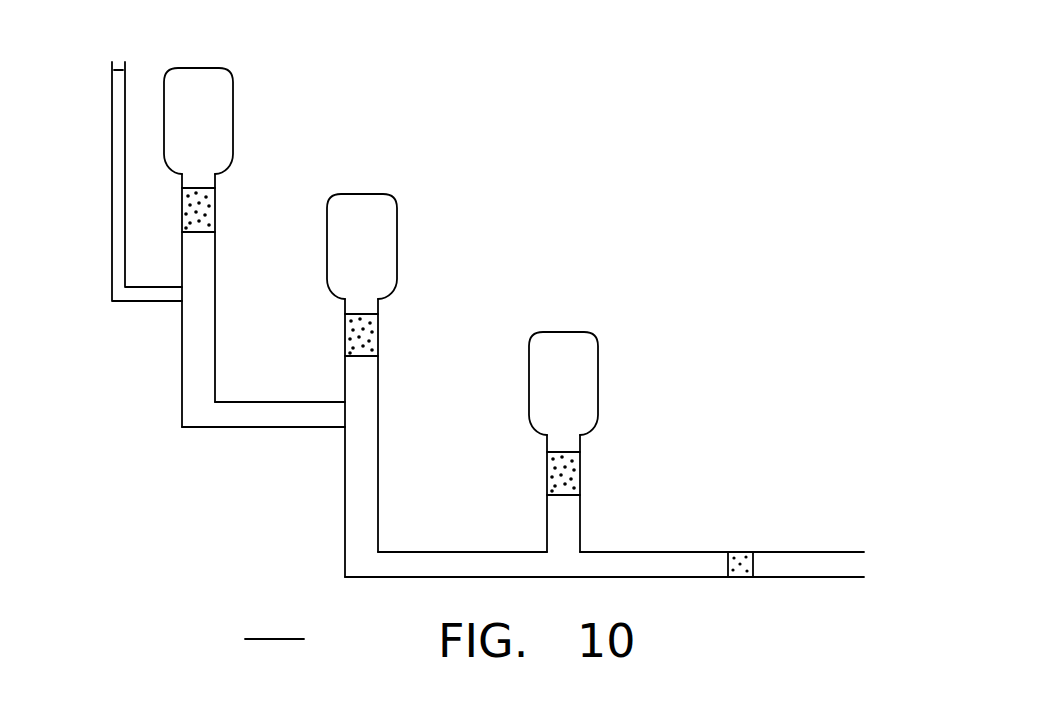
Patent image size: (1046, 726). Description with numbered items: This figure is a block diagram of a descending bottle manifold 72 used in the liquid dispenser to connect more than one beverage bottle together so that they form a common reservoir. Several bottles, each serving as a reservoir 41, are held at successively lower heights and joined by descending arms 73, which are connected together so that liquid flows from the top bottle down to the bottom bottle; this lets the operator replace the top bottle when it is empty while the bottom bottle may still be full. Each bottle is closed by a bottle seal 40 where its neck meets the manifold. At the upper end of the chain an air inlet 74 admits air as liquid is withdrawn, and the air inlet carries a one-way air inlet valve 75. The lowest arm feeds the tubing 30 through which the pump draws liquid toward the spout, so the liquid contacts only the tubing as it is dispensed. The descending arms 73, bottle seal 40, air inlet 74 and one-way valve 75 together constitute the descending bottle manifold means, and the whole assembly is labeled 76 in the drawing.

The tubing 30 is at (790, 552).
The bottle seal 40 is at (580, 468).
The reservoir 41 is at (563, 332).
The descending bottle manifold 72 is at (740, 552).
The descending arms 73 is at (242, 427).
The air inlet 74 is at (112, 165).
The one-way air inlet valve 75 is at (120, 64).
The reservoir manifold assembly 76 is at (280, 353).